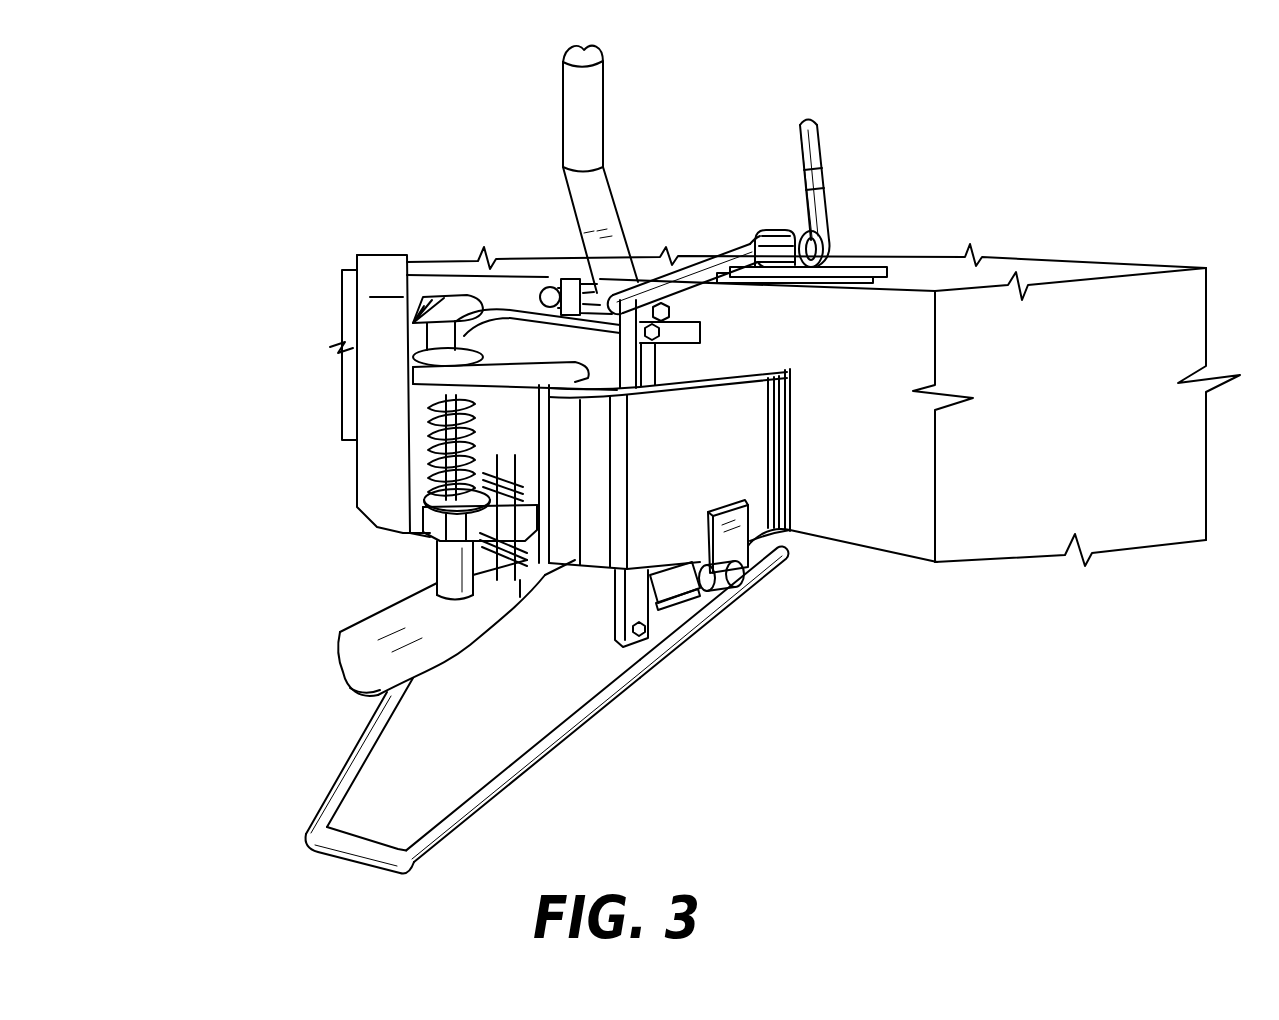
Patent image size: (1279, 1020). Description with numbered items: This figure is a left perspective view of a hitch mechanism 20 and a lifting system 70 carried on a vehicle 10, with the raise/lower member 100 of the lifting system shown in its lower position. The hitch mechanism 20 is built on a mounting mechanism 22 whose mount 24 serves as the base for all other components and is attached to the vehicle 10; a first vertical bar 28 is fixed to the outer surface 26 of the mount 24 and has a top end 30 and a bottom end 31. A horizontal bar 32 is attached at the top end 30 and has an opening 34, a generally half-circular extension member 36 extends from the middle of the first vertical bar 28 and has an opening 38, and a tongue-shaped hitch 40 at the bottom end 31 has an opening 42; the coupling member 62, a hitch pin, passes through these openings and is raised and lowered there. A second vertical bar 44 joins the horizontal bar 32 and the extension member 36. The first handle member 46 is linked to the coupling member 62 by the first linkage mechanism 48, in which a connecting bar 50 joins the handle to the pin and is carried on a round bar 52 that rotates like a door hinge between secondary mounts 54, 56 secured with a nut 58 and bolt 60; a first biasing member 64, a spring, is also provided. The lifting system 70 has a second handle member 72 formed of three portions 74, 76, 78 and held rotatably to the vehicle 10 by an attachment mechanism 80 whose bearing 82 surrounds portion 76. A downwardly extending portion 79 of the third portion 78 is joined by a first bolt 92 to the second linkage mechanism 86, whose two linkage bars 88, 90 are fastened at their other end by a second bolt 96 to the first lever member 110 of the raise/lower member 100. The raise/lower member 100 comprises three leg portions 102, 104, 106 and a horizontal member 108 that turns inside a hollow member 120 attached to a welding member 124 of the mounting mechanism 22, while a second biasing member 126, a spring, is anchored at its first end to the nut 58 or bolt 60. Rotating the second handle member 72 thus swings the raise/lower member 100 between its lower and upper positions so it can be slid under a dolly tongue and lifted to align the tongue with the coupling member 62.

The vehicle 10 is at (1013, 548).
The hitch mechanism 20 is at (272, 480).
The mounting mechanism 22 is at (603, 583).
The mount 24 is at (600, 547).
The outer surface 26 is at (547, 553).
The first vertical bar 28 is at (513, 570).
The top end 30 is at (523, 385).
The bottom end 31 is at (518, 598).
The horizontal bar 32 is at (470, 378).
The opening 34 is at (425, 356).
The extension member 36 is at (453, 530).
The opening 38 is at (427, 543).
The hitch 40 is at (365, 625).
The opening 42 is at (440, 577).
The second vertical bar 44 is at (397, 423).
The first handle member 46 is at (597, 168).
The first linkage mechanism 48 is at (517, 302).
The connecting bar 50 is at (577, 268).
The round bar 52 is at (592, 288).
The secondary mount 54 is at (567, 284).
The secondary mount 56 is at (694, 268).
The nut 58 is at (546, 290).
The bolt 60 is at (663, 303).
The coupling member 62 is at (430, 453).
The first biasing member 64 is at (430, 473).
The lifting system 70 is at (588, 750).
The second handle member 72 is at (822, 150).
The first portion 74 is at (825, 197).
The second portion 76 is at (800, 232).
The third portion 78 is at (740, 238).
The downwardly extending portion 79 is at (623, 335).
The attachment mechanism 80 is at (787, 250).
The bearing 82 is at (800, 260).
The second linkage mechanism 86 is at (666, 366).
The linkage bar 88 is at (607, 553).
The linkage bar 90 is at (657, 623).
The first bolt 92 is at (702, 332).
The second bolt 96 is at (657, 597).
The raise/lower member 100 is at (593, 741).
The first leg portion 102 is at (377, 707).
The leg portion 104 is at (370, 863).
The leg portion 106 is at (517, 770).
The horizontal member 108 is at (720, 603).
The first lever member 110 is at (690, 618).
The hollow member 120 is at (713, 587).
The welding member 124 is at (743, 530).
The second biasing member 126 is at (587, 366).